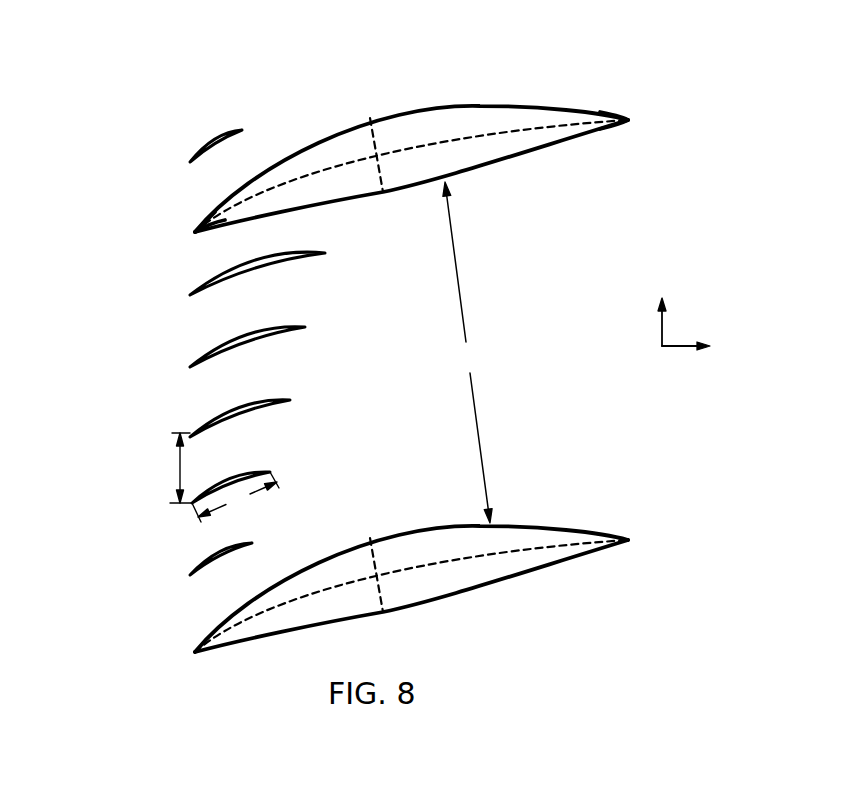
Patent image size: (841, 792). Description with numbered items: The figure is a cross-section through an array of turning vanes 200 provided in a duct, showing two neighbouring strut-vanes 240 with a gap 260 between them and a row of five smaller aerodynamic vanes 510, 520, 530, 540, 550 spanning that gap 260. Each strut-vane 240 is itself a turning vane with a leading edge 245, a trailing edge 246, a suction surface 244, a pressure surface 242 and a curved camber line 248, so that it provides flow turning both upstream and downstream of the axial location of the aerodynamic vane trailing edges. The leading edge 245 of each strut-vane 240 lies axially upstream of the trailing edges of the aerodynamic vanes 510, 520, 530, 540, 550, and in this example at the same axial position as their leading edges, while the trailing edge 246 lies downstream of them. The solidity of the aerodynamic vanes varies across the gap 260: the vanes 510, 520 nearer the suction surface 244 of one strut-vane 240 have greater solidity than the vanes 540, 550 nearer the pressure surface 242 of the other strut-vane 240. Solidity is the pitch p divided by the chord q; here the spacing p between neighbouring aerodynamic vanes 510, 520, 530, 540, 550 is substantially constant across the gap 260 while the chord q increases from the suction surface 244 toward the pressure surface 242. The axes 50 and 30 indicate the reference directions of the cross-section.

The array of turning vanes 200 is at (123, 122).
The strut-vane 240 is at (432, 120).
The pressure surface 242 is at (483, 162).
The suction surface 244 is at (383, 110).
The leading edge 245 is at (193, 233).
The trailing edge 246 is at (628, 120).
The camber line 248 is at (522, 128).
The gap 260 is at (468, 352).
The aerodynamic vane 510 is at (233, 544).
The aerodynamic vane 520 is at (252, 469).
The aerodynamic vane 530 is at (268, 398).
The aerodynamic vane 540 is at (287, 327).
The aerodynamic vane 550 is at (307, 254).
The radial direction 50 is at (668, 307).
The axial direction 30 is at (706, 347).